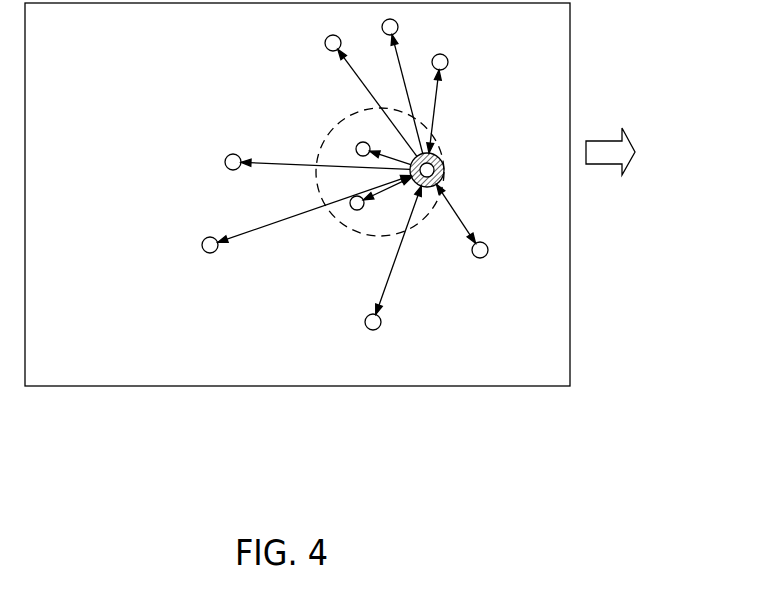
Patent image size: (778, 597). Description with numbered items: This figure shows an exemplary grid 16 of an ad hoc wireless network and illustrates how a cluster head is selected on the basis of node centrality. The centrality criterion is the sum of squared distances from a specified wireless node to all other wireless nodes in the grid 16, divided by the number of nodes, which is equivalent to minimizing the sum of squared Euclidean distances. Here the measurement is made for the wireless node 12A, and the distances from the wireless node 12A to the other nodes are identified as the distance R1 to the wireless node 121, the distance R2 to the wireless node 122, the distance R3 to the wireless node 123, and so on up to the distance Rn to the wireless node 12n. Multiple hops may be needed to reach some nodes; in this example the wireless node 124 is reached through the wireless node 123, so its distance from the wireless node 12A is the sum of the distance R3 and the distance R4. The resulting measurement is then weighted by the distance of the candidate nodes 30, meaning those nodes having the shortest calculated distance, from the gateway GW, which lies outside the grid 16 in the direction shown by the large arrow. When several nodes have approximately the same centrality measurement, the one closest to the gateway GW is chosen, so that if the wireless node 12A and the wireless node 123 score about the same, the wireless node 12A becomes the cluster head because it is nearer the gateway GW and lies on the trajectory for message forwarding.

The grid 16 is at (525, 386).
The candidate nodes 30 is at (355, 233).
The wireless node 12A is at (443, 166).
The wireless node 121 is at (484, 257).
The wireless node 122 is at (379, 327).
The wireless node 123 is at (349, 196).
The wireless node 124 is at (208, 253).
The wireless node 12n is at (447, 57).
The distance R1 is at (462, 213).
The distance R2 is at (401, 250).
The distance R3 is at (387, 198).
The distance R4 is at (314, 221).
The distance Rn is at (445, 111).
The gateway GW is at (639, 151).